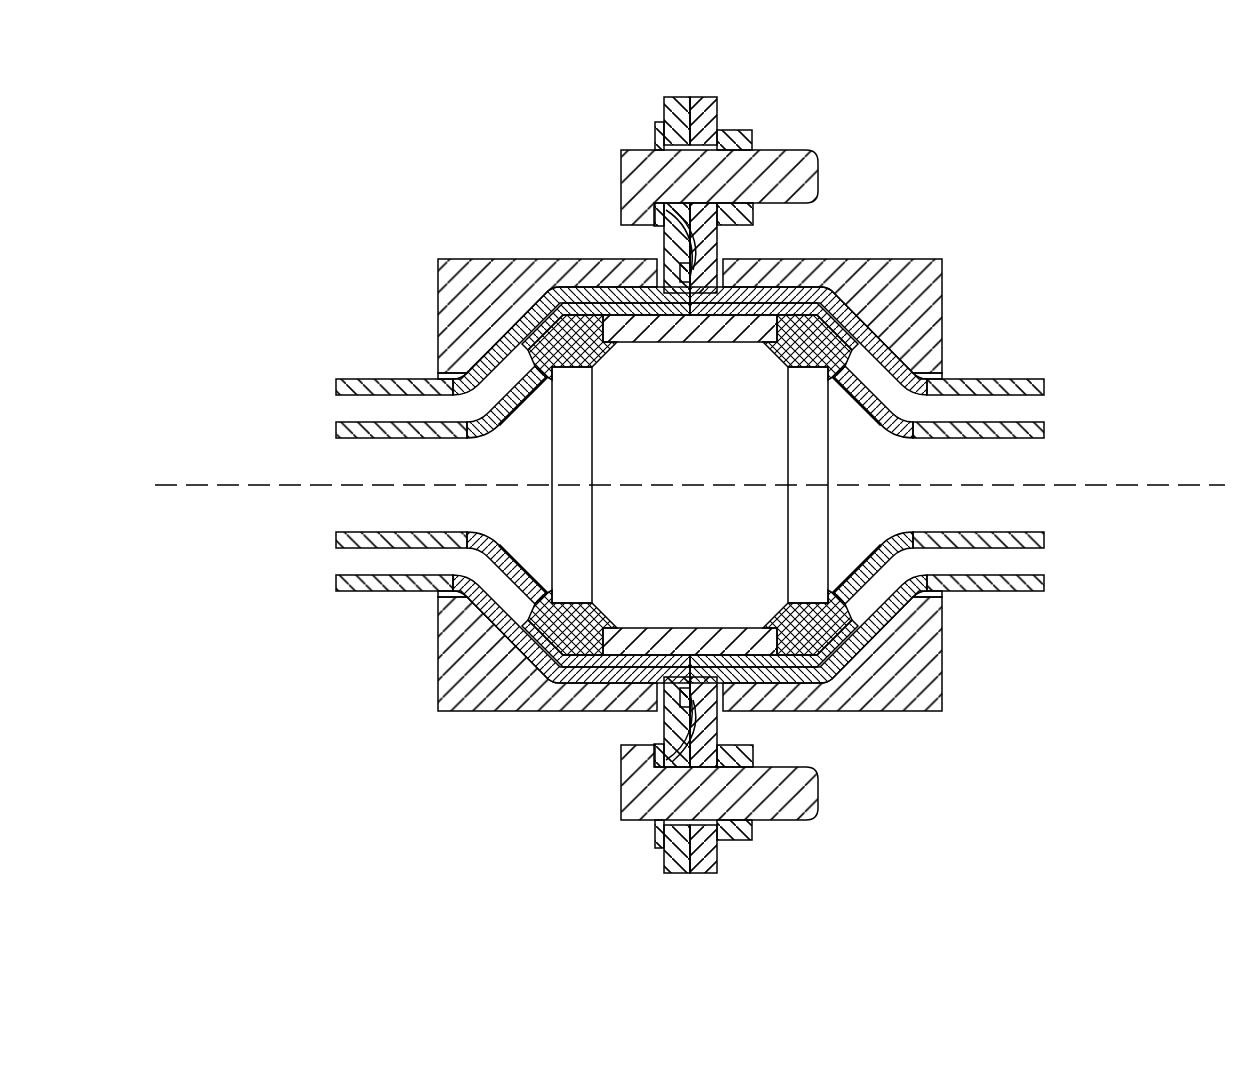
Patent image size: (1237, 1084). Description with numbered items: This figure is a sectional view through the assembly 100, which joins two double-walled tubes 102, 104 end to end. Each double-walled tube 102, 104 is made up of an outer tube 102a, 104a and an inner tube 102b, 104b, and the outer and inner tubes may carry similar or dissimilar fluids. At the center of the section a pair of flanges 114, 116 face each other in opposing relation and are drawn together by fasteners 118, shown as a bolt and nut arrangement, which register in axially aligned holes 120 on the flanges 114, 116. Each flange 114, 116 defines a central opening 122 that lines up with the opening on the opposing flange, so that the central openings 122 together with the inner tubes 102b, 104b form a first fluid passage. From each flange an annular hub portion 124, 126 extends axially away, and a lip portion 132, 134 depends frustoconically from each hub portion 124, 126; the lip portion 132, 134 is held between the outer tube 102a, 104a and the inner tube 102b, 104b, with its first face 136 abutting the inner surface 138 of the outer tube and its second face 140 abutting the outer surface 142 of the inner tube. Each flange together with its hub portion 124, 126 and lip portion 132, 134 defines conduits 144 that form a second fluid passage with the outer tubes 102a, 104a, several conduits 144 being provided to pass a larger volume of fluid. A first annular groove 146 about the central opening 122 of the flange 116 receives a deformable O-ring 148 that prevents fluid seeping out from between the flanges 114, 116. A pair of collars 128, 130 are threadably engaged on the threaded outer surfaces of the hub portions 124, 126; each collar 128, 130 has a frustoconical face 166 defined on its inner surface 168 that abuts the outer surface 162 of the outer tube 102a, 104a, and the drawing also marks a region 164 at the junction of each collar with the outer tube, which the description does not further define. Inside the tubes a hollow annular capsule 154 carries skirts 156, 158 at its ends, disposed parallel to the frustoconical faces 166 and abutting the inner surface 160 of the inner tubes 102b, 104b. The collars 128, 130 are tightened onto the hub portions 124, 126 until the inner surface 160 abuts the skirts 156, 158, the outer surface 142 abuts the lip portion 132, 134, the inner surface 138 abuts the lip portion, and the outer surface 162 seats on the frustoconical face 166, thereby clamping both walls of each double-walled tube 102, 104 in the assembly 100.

The assembly 100 is at (1034, 150).
The double-walled tube 102 is at (1020, 450).
The outer tube 102a is at (1040, 388).
The inner tube 102b is at (1040, 432).
The double-walled tube 104 is at (345, 418).
The outer tube 104a is at (338, 380).
The inner tube 104b is at (340, 430).
The flange 114 is at (700, 118).
The flange 116 is at (680, 115).
The fasteners 118 is at (695, 470).
The holes 120 is at (715, 147).
The central opening 122 is at (704, 473).
The annular hub portion 124 is at (765, 285).
The annular hub portion 126 is at (585, 300).
The collar 128 is at (905, 270).
The collar 130 is at (500, 268).
The lip portion 132 is at (800, 300).
The lip portion 134 is at (548, 300).
The first face 136 is at (895, 690).
The inner surface of the outer tube 138 is at (920, 590).
The second face 140 is at (762, 625).
The outer surface of the inner tube 142 is at (868, 592).
The conduit 144 is at (640, 300).
The first annular groove 146 is at (668, 215).
The O-ring 148 is at (692, 276).
The hollow annular capsule 154 is at (598, 614).
The skirt 156 is at (845, 300).
The skirt 158 is at (605, 362).
The inner surface of the inner tube 160 is at (858, 580).
The outer surface of the outer tube 162 is at (905, 630).
The weld joint 164 is at (440, 370).
The frustoconical face 166 is at (905, 585).
The inner surface of the collar 168 is at (547, 680).